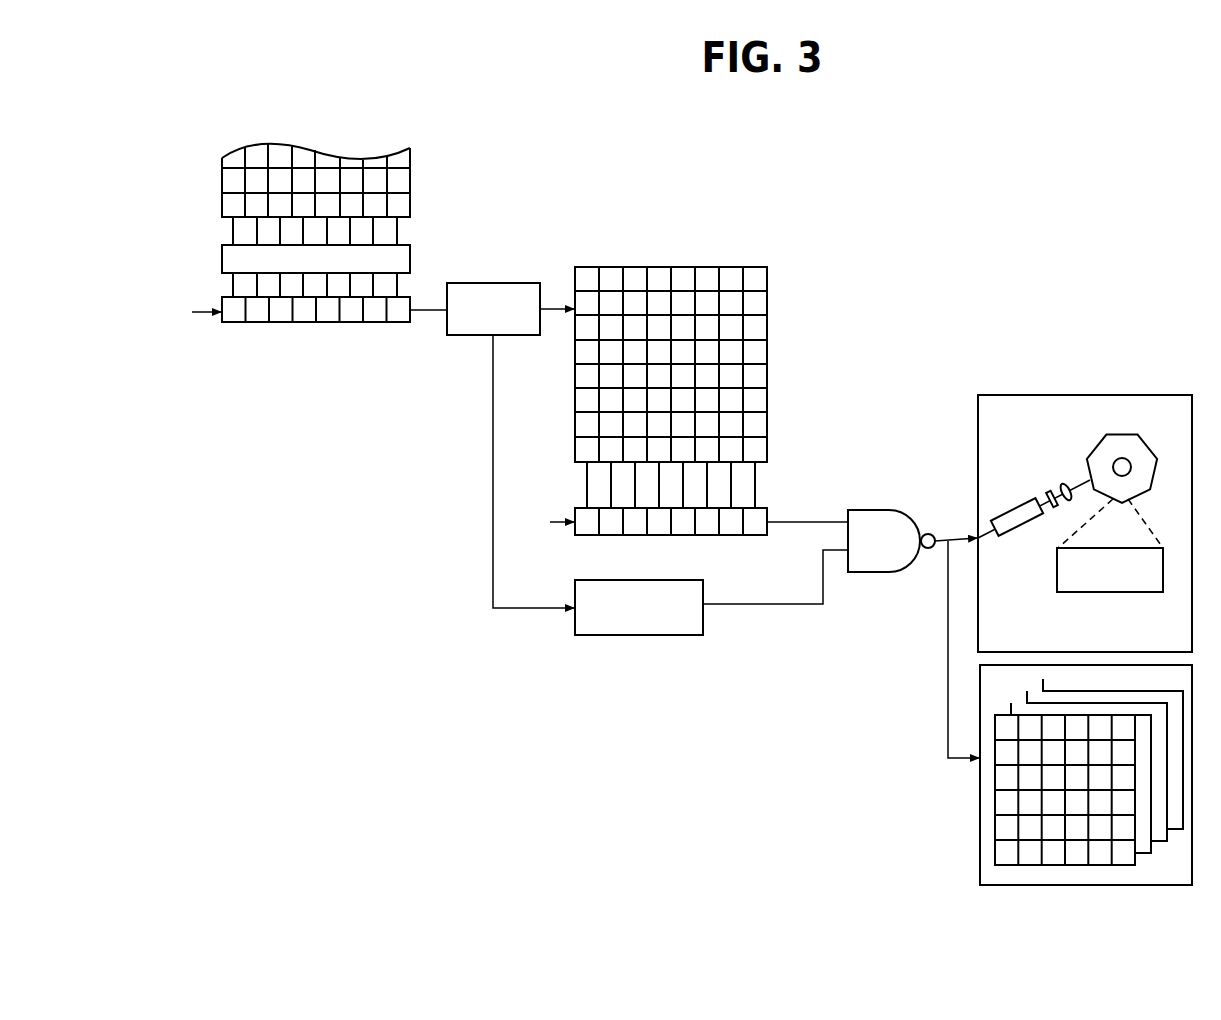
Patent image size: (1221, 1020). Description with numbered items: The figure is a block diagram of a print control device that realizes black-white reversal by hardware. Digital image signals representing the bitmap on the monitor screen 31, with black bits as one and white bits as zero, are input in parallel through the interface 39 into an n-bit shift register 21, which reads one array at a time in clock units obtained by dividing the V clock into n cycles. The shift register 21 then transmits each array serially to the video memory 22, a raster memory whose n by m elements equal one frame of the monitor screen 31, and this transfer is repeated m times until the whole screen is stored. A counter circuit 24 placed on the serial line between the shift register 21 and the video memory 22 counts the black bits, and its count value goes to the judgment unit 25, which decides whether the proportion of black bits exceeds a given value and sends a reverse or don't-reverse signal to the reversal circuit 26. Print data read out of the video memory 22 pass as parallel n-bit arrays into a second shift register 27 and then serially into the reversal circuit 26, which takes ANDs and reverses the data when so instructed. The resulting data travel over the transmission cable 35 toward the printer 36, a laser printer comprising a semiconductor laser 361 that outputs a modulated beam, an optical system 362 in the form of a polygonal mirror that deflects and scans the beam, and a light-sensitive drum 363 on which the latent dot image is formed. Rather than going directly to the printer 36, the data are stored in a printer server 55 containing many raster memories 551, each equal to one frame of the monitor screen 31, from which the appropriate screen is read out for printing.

The shift register 21 is at (303, 322).
The video memory 22 is at (668, 267).
The counter circuit 24 is at (505, 283).
The judgment unit 25 is at (650, 635).
The reversal circuit 26 is at (862, 510).
The shift register 27 is at (770, 508).
The monitor screen 31 is at (410, 186).
The transmission cable 35 is at (950, 540).
The printer 36 is at (1085, 501).
The interface 39 is at (410, 250).
The printer server 55 is at (1060, 798).
The semiconductor laser 361 is at (1015, 512).
The optical system 362 is at (1147, 447).
The light-sensitive drum 363 is at (1057, 577).
The raster memory 551 is at (1080, 865).